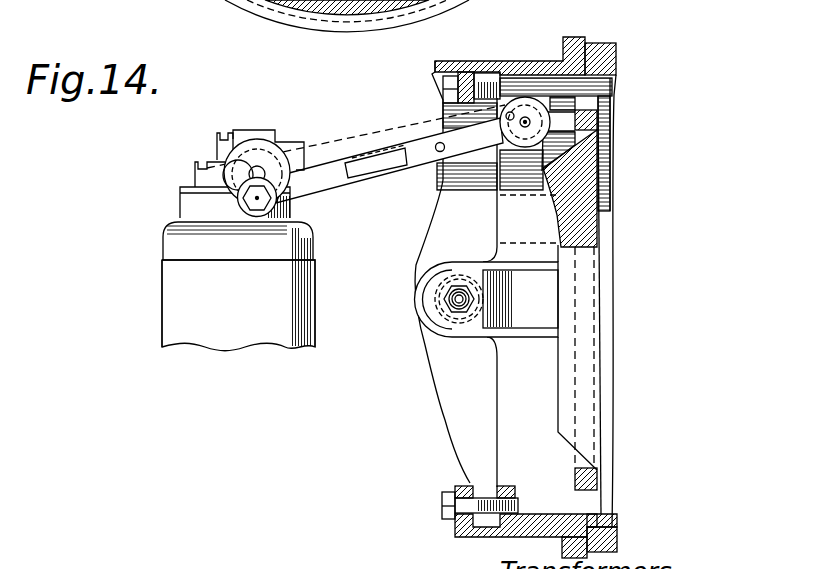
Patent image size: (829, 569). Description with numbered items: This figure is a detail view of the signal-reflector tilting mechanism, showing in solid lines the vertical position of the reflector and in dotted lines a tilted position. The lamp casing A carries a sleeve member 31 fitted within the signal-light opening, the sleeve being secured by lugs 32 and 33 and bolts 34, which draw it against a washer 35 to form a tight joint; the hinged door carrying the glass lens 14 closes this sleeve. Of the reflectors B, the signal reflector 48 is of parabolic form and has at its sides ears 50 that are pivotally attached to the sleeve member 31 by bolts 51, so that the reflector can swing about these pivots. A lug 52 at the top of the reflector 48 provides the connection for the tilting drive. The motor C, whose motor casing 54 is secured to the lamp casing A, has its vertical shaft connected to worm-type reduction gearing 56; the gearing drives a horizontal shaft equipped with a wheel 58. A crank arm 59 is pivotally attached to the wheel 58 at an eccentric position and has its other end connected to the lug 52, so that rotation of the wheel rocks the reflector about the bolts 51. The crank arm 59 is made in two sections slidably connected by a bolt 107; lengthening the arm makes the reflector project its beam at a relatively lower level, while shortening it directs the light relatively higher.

The glass lens 14 is at (348, 14).
The sleeve member 31 is at (606, 48).
The lug 32 is at (466, 85).
The lug 33 is at (490, 88).
The bolt 34 is at (447, 89).
The washer 35 is at (590, 522).
The signal reflector 48 is at (588, 198).
The ear 50 is at (528, 336).
The bolt 51 is at (448, 305).
The lug 52 is at (524, 150).
The motor casing 54 is at (165, 328).
The reduction gearing 56 is at (258, 132).
The wheel 58 is at (240, 150).
The crank arm 59 is at (325, 175).
The bolt 107 is at (437, 152).
The lamp casing A is at (535, 60).
The reflectors B is at (582, 242).
The motor C is at (165, 300).